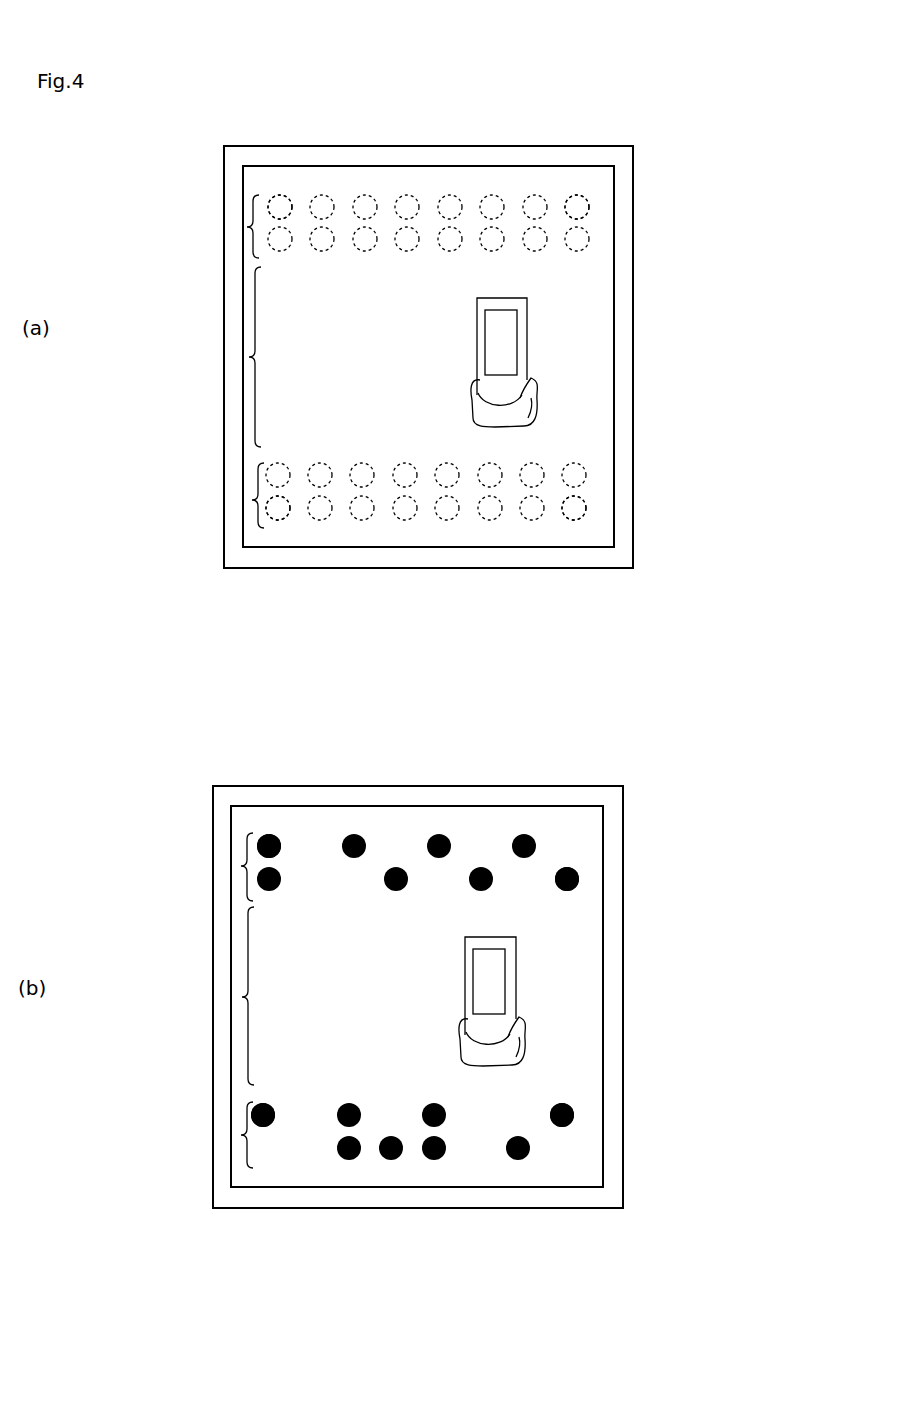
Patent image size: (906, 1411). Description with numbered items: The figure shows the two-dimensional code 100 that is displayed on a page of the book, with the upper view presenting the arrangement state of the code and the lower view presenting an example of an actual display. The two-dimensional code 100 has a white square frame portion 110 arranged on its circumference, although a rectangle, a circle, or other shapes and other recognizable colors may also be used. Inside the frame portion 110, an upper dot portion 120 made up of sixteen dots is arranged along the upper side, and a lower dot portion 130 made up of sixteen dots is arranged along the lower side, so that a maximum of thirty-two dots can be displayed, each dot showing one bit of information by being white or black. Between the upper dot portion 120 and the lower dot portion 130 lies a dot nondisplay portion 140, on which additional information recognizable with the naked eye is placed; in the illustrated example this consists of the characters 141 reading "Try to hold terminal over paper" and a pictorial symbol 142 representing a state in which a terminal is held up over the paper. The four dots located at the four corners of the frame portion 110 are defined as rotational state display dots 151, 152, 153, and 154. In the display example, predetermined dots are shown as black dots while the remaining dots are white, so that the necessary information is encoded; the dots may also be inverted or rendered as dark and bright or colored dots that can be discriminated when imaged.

The two-dimensional code 100 is at (670, 168).
The frame portion 110 is at (634, 356).
The upper dot portion 120 is at (247, 228).
The lower dot portion 130 is at (252, 500).
The dot nondisplay portion 140 is at (249, 357).
The characters 141 is at (412, 325).
The pictorial symbol 142 is at (548, 323).
The rotational state display dot 151 is at (282, 196).
The rotational state display dot 152 is at (280, 517).
The rotational state display dot 153 is at (570, 517).
The rotational state display dot 154 is at (579, 196).